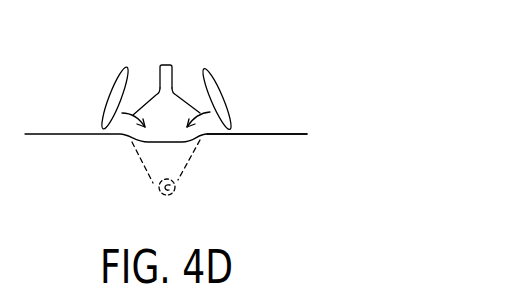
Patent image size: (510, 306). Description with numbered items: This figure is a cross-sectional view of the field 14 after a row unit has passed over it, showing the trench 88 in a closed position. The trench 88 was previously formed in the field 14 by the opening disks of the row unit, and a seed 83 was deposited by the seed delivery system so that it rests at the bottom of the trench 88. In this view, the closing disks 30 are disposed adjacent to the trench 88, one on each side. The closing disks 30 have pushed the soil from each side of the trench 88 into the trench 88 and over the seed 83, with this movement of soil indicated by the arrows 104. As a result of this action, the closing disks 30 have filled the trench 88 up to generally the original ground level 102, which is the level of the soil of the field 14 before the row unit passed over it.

The field 14 is at (46, 170).
The closing disks 30 is at (120, 97).
The seed 83 is at (176, 199).
The trench 88 is at (149, 170).
The original ground level 102 is at (293, 133).
The arrows 104 is at (166, 82).